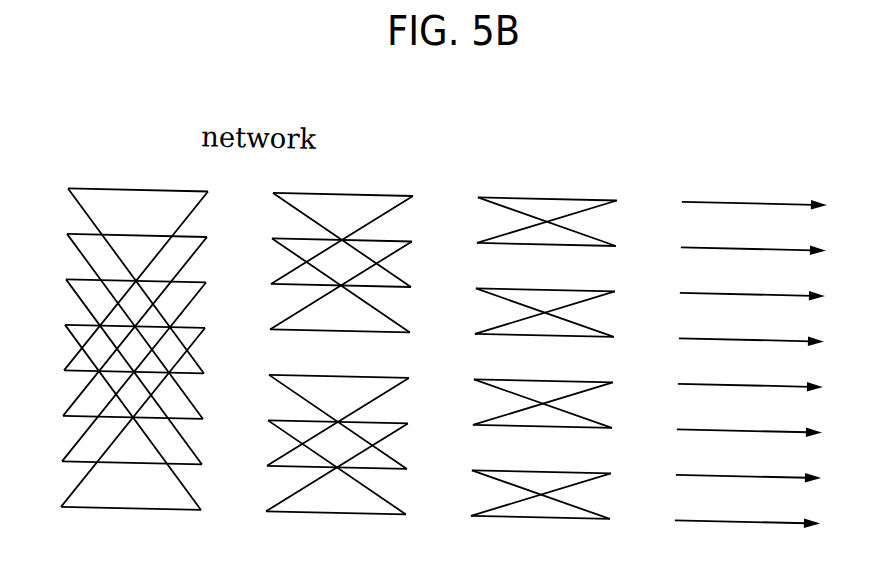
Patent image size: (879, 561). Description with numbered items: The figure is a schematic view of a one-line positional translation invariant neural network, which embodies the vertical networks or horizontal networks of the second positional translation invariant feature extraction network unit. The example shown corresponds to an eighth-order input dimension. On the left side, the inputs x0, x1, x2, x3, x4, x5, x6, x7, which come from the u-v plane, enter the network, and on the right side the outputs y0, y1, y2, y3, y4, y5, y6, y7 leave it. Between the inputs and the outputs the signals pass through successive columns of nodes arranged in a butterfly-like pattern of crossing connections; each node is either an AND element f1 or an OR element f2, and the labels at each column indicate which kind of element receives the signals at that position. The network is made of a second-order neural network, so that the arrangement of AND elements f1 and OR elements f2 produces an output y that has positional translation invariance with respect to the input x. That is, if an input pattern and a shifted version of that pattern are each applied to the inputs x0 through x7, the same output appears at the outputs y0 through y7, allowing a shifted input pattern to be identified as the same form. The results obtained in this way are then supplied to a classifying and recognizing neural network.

The input x0 is at (113, 272).
The input x1 is at (112, 318).
The input x2 is at (111, 363).
The input x3 is at (110, 409).
The input x4 is at (113, 285).
The input x5 is at (112, 331).
The input x6 is at (111, 376).
The input x7 is at (110, 422).
The output y0 is at (771, 205).
The output y1 is at (770, 250).
The output y2 is at (769, 296).
The output y3 is at (768, 341).
The output y4 is at (767, 387).
The output y5 is at (766, 432).
The output y6 is at (765, 478).
The output y7 is at (764, 523).
The AND element f1 is at (441, 335).
The OR element f2 is at (440, 380).